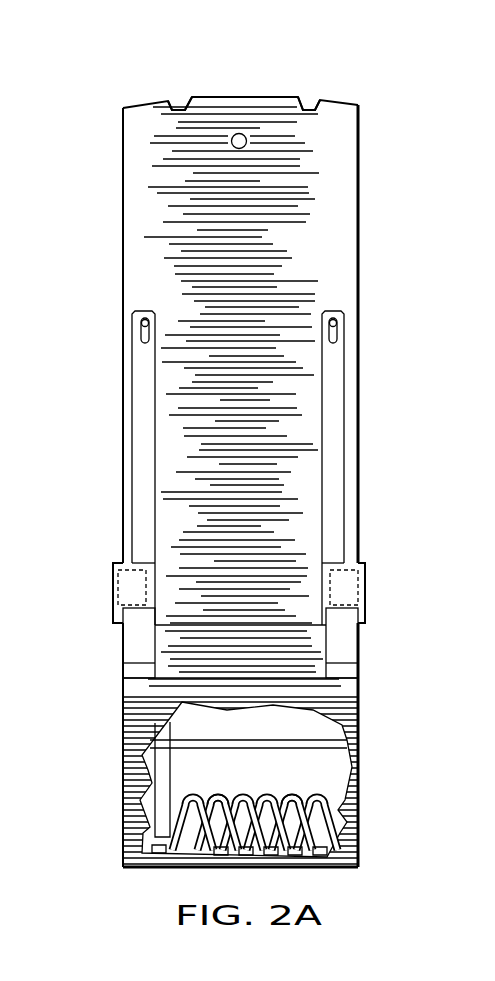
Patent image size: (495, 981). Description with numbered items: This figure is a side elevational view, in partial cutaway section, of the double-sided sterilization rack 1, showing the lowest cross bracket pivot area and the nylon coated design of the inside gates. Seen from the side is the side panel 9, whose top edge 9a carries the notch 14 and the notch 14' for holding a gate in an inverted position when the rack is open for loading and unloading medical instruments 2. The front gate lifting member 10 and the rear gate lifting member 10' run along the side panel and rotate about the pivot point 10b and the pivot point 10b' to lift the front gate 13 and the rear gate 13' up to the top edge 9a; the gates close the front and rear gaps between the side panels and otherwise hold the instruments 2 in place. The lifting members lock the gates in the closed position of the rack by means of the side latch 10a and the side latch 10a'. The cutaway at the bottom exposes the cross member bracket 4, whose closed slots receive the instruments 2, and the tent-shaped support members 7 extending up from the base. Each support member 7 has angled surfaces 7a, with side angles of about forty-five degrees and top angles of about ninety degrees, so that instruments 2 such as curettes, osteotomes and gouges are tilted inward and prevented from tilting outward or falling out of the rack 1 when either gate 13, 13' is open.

The sterilization rack 1 is at (404, 206).
The medical instruments 2 is at (162, 793).
The cross member bracket 4 is at (312, 742).
The support member 7 is at (333, 816).
The angled surface 7a is at (216, 802).
The side panel 9 is at (310, 473).
The top edge 9a is at (236, 96).
The front gate lifting member 10 is at (102, 468).
The rear gate lifting member 10' is at (370, 468).
The side latch 10a is at (96, 643).
The side latch 10a' is at (389, 643).
The pivot point 10b is at (93, 321).
The pivot point 10b' is at (385, 325).
The front gate 13 is at (112, 567).
The rear gate 13' is at (380, 568).
The notch 14 is at (132, 92).
The notch 14' is at (351, 89).